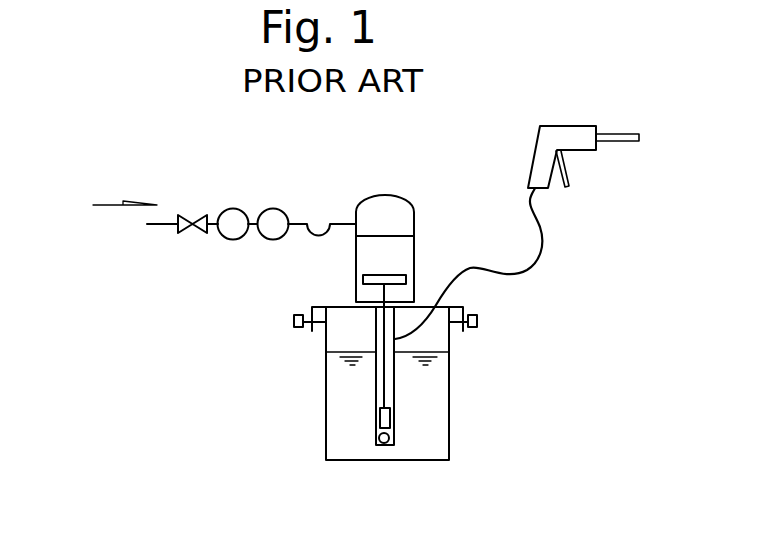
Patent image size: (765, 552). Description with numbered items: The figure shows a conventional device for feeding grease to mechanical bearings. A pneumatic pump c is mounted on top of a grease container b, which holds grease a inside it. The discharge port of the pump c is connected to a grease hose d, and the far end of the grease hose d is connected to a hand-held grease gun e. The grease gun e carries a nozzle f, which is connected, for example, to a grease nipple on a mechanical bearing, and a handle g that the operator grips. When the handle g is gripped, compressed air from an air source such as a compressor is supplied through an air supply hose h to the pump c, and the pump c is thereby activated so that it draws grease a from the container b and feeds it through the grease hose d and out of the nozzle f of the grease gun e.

The grease a is at (357, 387).
The grease container b is at (449, 428).
The pneumatic pump c is at (404, 195).
The grease hose d is at (534, 259).
The grease gun e is at (547, 146).
The nozzle f is at (622, 134).
The handle g is at (568, 177).
The air supply hose h is at (318, 233).